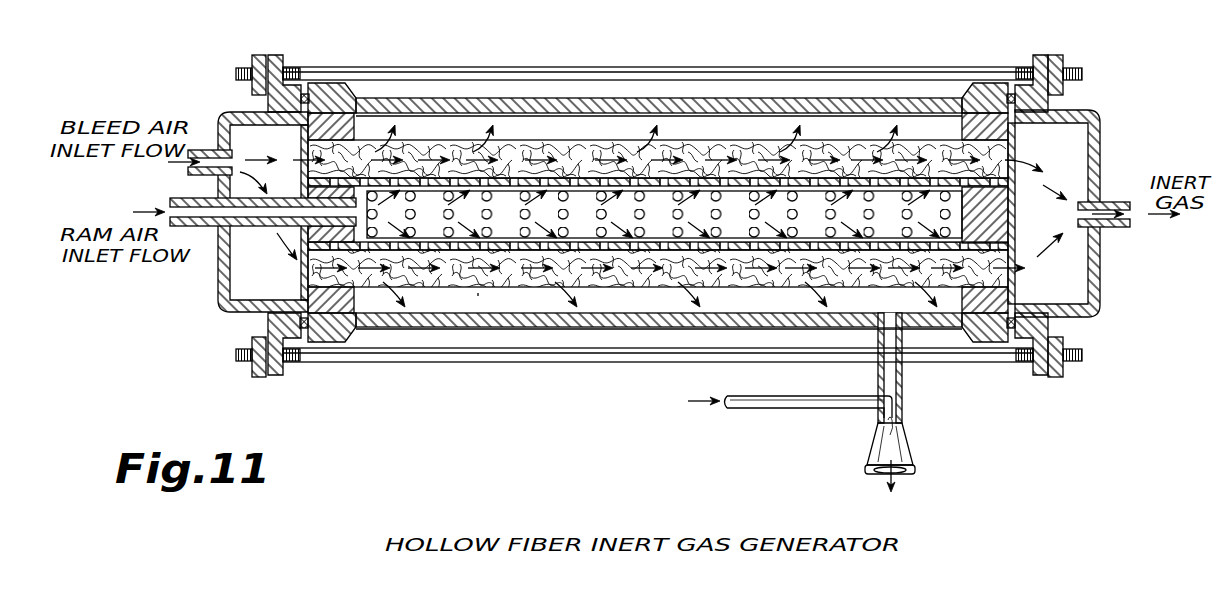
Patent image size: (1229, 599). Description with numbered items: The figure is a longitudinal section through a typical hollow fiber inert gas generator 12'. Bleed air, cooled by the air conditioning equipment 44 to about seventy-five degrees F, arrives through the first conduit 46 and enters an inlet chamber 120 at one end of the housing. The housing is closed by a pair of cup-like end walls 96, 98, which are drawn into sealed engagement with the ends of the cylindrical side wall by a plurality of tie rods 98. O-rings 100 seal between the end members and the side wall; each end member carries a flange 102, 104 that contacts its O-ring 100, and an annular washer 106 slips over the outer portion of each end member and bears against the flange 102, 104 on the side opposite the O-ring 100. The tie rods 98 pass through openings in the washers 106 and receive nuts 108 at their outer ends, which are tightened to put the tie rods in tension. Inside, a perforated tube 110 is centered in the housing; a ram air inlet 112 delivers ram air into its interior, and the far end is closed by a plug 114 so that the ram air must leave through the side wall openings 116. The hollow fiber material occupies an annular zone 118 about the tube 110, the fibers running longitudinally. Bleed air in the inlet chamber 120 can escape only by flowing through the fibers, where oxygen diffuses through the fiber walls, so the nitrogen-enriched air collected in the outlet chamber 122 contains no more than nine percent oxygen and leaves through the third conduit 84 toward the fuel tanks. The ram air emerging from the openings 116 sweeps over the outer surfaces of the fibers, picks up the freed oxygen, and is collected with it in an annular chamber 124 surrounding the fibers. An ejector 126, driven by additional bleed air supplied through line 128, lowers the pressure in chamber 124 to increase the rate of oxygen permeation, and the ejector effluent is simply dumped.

The inert gas generator 12' is at (659, 171).
The air conditioning equipment 44 is at (705, 106).
The first conduit 46 is at (212, 150).
The third conduit 84 is at (1114, 226).
The end wall 96 is at (218, 311).
The tie rods 98 is at (407, 65).
The O-rings 100 is at (310, 97).
The flange 102 is at (290, 84).
The flange 104 is at (997, 365).
The annular washer 106 is at (264, 63).
The nuts 108 is at (262, 86).
The perforated tube 110 is at (547, 250).
The ram air inlet 112 is at (207, 215).
The plug 114 is at (1060, 195).
The side wall openings 116 is at (583, 224).
The annular zone of fiber material 118 is at (577, 160).
The inlet chamber 120 is at (250, 293).
The outlet chamber 122 is at (1068, 279).
The annular chamber 124 is at (478, 293).
The ejector 126 is at (906, 418).
The ejector bleed air line 128 is at (835, 410).